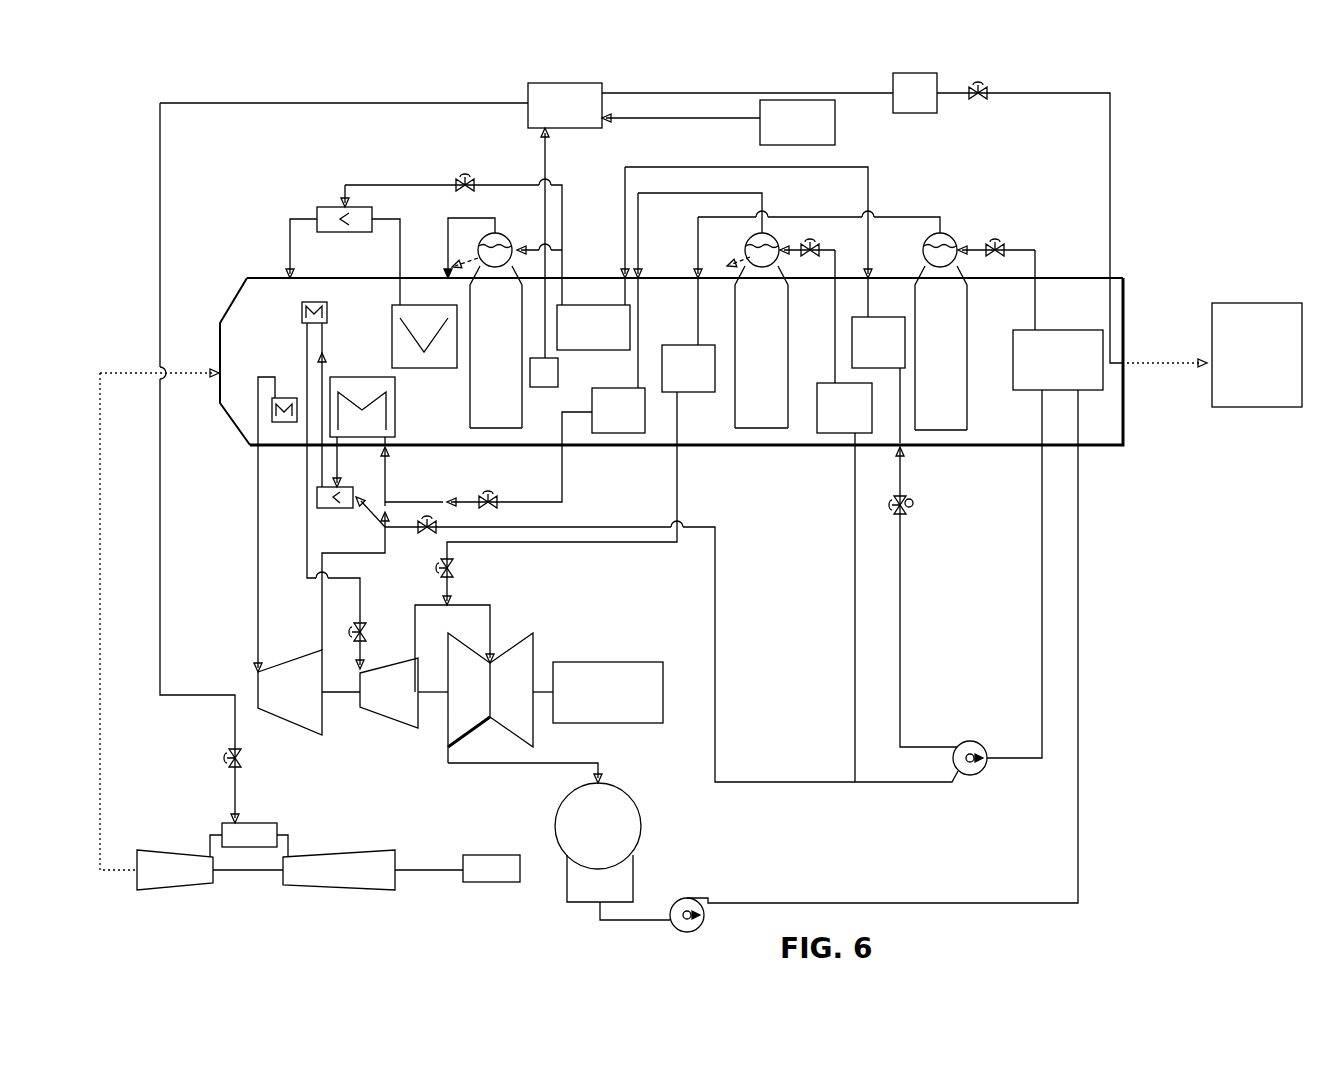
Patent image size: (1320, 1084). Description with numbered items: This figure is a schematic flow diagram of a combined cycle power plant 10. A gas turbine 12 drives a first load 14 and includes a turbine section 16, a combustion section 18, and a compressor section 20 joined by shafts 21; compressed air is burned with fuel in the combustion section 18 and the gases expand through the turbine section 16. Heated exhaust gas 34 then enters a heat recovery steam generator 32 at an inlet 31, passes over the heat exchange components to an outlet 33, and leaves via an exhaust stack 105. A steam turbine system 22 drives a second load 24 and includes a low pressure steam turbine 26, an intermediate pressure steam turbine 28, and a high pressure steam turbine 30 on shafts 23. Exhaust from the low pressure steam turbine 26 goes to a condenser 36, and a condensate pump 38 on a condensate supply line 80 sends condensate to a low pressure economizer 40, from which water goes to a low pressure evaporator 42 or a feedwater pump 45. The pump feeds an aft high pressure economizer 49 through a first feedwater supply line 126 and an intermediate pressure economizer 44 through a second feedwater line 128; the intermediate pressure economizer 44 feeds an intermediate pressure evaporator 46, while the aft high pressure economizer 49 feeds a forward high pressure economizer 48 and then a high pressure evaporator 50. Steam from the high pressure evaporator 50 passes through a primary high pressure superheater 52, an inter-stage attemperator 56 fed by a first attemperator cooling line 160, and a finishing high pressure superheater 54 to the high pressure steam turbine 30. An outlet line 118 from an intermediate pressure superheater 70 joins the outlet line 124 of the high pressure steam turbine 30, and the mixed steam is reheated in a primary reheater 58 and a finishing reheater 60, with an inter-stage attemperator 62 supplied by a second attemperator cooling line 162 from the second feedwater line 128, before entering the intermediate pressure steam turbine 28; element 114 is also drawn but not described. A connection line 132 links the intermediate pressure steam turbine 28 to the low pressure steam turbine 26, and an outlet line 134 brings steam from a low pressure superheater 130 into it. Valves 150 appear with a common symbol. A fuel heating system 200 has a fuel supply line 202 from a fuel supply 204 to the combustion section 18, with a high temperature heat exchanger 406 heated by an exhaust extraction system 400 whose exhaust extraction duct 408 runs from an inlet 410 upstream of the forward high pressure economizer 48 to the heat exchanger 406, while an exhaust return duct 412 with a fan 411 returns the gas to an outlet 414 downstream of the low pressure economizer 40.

The combined cycle power plant 10 is at (1248, 138).
The gas turbine 12 is at (188, 905).
The first load 14 is at (505, 856).
The turbine section 16 is at (172, 852).
The combustion section 18 is at (252, 825).
The compressor section 20 is at (340, 856).
The shafts 21 is at (255, 872).
The steam turbine system 22 is at (538, 601).
The shafts 23 is at (545, 690).
The second load 24 is at (608, 662).
The low pressure steam turbine 26 is at (448, 720).
The intermediate pressure steam turbine 28 is at (392, 722).
The high pressure steam turbine 30 is at (303, 720).
The inlet 31 is at (220, 347).
The heat recovery steam generator 32 is at (1052, 278).
The outlet 33 is at (1125, 300).
The exhaust gas 34 is at (100, 783).
The condenser 36 is at (641, 827).
The condensate pump 38 is at (700, 926).
The low pressure economizer 40 is at (1011, 338).
The low pressure evaporator 42 is at (967, 410).
The intermediate pressure economizer 44 is at (844, 341).
The feedwater pump 45 is at (975, 742).
The intermediate pressure evaporator 46 is at (788, 425).
The forward high pressure economizer 48 is at (593, 258).
The aft high pressure economizer 49 is at (765, 267).
The high pressure evaporator 50 is at (470, 416).
The primary high pressure superheater 52 is at (425, 305).
The finishing high pressure superheater 54 is at (285, 422).
The inter-stage attemperator 56 is at (345, 232).
The primary reheater 58 is at (343, 377).
The finishing reheater 60 is at (327, 312).
The inter-stage attemperator 62 is at (338, 508).
The intermediate pressure superheater 70 is at (618, 313).
The condensate supply line 80 is at (1010, 903).
The exhaust stack 105 is at (1257, 355).
The intermediate pressure steam line 114 is at (362, 612).
The outlet line 118 is at (562, 490).
The outlet line 124 is at (320, 631).
The first feedwater supply line 126 is at (900, 650).
The second feedwater line 128 is at (855, 588).
The low pressure superheater 130 is at (688, 304).
The connection line 132 is at (450, 598).
The outlet line 134 is at (677, 505).
The valves 150 is at (982, 88).
The first attemperator cooling line 160 is at (346, 184).
The second attemperator cooling line 162 is at (744, 651).
The fuel heating system 200 is at (642, 75).
The fuel supply line 202 is at (380, 103).
The fuel supply 204 is at (797, 122).
The exhaust extraction system 400 is at (1116, 76).
The high temperature heat exchanger 406 is at (565, 105).
The exhaust extraction duct 408 is at (548, 155).
The inlet 410 is at (558, 372).
The fan 411 is at (915, 113).
The exhaust return duct 412 is at (844, 91).
The outlet 414 is at (1124, 353).